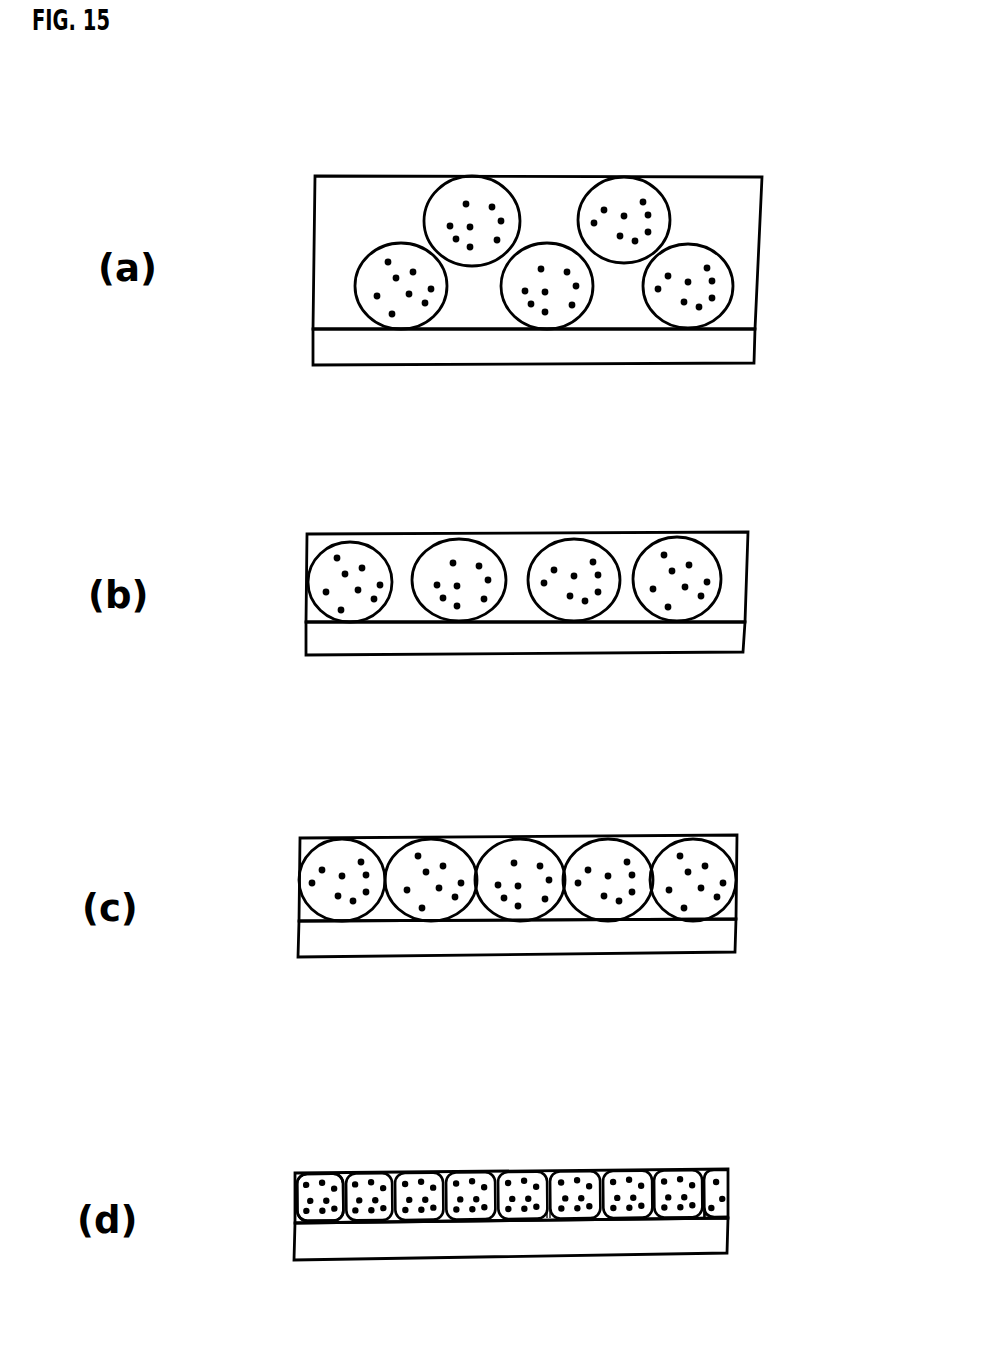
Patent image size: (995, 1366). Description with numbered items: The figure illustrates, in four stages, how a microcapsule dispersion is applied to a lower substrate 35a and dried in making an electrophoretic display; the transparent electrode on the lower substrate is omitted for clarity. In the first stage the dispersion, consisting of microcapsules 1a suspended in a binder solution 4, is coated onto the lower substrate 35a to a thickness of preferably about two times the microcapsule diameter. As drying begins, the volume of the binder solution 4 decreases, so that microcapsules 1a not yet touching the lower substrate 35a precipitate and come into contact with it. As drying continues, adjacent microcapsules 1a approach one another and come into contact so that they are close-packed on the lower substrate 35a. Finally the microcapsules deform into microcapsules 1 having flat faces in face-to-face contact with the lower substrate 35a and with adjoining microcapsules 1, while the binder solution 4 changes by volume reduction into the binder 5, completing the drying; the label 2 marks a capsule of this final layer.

The microcapsule 1a is at (644, 186).
The binder solution 4 is at (748, 197).
The lower substrate 35a is at (748, 345).
The microcapsule 1 is at (625, 1171).
The particle wall / coating 2 is at (331, 1180).
The binder 5 is at (547, 1173).